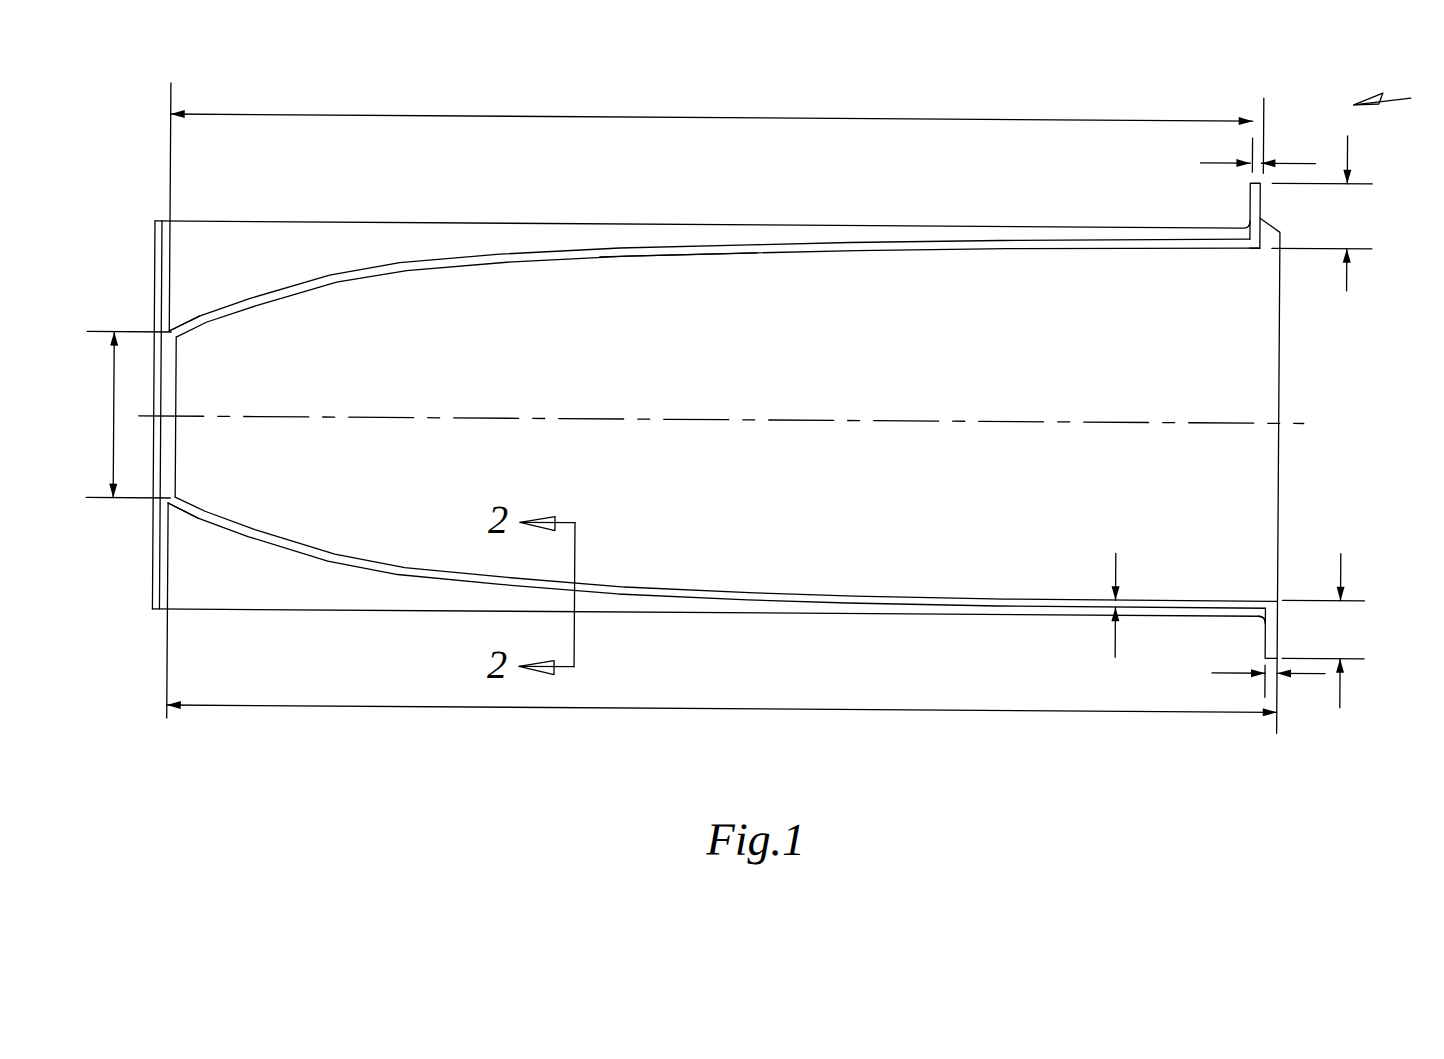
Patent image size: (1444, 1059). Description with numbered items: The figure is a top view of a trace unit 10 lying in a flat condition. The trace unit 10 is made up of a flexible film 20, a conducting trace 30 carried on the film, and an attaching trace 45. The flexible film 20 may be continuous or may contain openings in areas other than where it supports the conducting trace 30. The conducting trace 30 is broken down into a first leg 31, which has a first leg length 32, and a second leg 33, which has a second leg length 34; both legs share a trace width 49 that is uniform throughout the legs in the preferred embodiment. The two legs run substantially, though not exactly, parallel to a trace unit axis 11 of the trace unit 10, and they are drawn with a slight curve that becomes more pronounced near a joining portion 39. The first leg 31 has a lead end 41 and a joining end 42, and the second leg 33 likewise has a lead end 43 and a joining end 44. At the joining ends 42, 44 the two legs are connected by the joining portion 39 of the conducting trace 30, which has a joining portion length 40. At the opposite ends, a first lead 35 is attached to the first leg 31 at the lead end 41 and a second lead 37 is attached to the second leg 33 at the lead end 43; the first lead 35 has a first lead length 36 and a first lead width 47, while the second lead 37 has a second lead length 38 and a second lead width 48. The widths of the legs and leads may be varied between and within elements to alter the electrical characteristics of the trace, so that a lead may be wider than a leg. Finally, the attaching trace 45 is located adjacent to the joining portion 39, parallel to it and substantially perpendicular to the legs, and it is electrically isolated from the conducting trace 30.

The trace unit 10 is at (1397, 100).
The trace unit axis 11 is at (1163, 416).
The flexible film 20 is at (1281, 339).
The conducting trace 30 is at (851, 238).
The first leg 31 is at (660, 252).
The first leg length 32 is at (663, 112).
The second leg 33 is at (651, 592).
The second leg length 34 is at (862, 707).
The first lead 35 is at (1250, 207).
The first lead length 36 is at (1347, 130).
The second lead 37 is at (1266, 636).
The second lead length 38 is at (1343, 548).
The joining portion 39 is at (178, 390).
The joining portion length 40 is at (115, 453).
The lead end of first leg 41 is at (1258, 243).
The joining end of first leg 42 is at (178, 337).
The lead end of second leg 43 is at (1272, 592).
The joining end of second leg 44 is at (177, 497).
The attaching trace 45 is at (163, 273).
The first lead width 47 is at (1210, 158).
The second lead width 48 is at (1224, 666).
The trace width 49 is at (1118, 549).